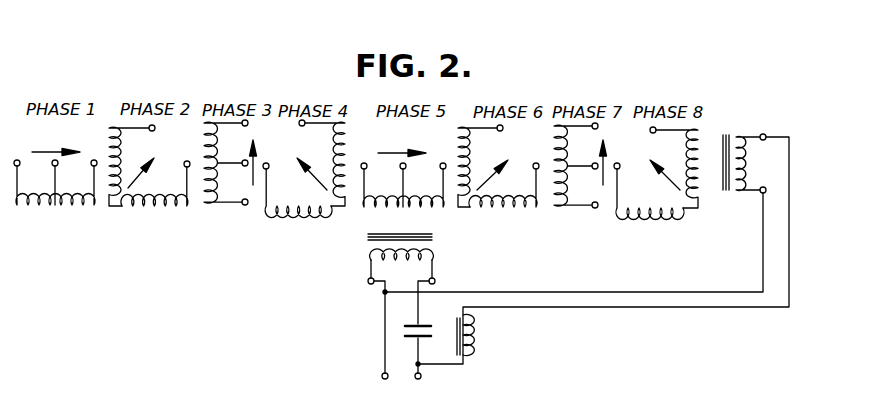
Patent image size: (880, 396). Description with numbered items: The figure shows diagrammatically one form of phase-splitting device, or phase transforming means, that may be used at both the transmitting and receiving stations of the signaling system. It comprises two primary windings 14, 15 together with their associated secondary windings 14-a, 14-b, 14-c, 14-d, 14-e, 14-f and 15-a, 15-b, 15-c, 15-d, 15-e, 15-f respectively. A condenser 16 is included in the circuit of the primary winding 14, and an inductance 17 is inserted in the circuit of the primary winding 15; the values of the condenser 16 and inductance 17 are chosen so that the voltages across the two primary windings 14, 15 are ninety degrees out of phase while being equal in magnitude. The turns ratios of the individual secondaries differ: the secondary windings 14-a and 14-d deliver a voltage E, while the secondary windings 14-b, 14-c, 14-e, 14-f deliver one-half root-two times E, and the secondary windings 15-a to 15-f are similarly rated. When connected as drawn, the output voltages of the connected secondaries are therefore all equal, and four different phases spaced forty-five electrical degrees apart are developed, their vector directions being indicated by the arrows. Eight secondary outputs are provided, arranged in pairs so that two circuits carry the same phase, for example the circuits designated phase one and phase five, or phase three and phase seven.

The secondary winding 14-a is at (31, 207).
The secondary winding 14-b is at (176, 208).
The secondary winding 14-c is at (272, 209).
The secondary winding 14-d is at (423, 209).
The secondary winding 14-e is at (517, 209).
The secondary winding 14-f is at (629, 210).
The secondary winding 15-a is at (109, 146).
The secondary winding 15-b is at (203, 156).
The secondary winding 15-c is at (330, 152).
The secondary winding 15-d is at (458, 150).
The secondary winding 15-e is at (554, 158).
The secondary winding 15-f is at (684, 153).
The primary winding 14 is at (433, 246).
The primary winding 15 is at (752, 124).
The condenser 16 is at (389, 336).
The inductance 17 is at (472, 341).